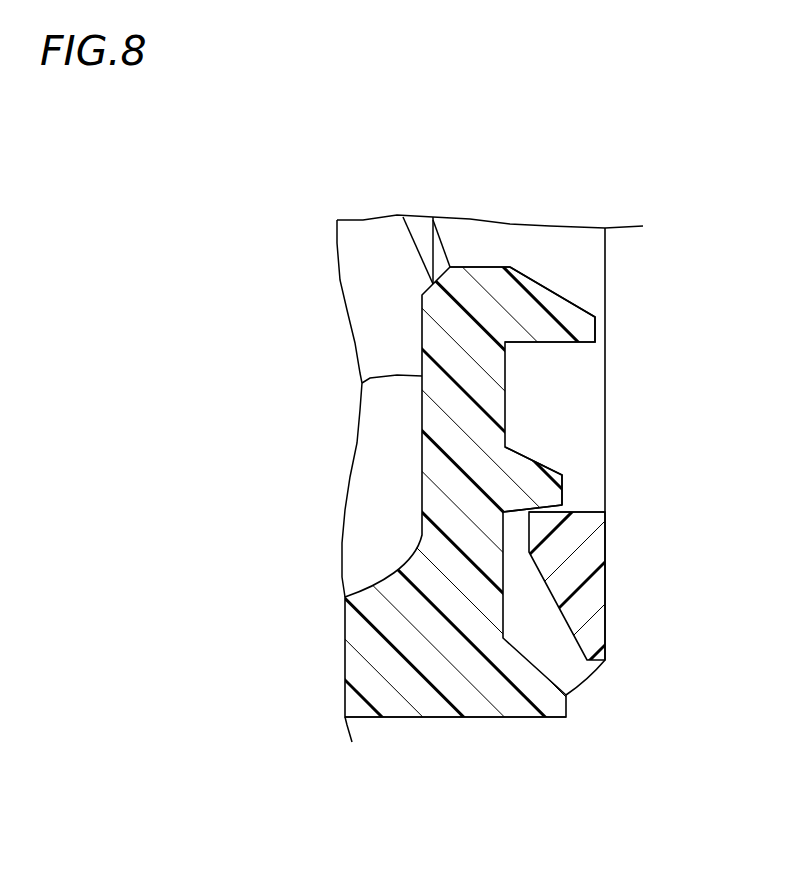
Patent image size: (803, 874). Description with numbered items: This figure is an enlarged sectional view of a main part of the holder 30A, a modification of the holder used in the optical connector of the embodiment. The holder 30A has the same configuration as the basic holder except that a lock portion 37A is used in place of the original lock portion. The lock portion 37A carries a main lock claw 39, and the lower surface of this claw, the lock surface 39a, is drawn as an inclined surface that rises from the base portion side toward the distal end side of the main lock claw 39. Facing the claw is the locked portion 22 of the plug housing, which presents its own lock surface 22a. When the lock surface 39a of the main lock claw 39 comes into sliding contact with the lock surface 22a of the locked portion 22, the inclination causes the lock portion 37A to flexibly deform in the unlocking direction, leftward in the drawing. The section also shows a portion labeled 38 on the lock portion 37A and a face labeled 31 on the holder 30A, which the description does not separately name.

The locked portion 22 is at (578, 537).
The lock surface 22a is at (583, 513).
The holder 30A is at (452, 717).
The end surface of housing 31 is at (413, 715).
The lock portion 37A is at (533, 270).
The flange portion 38 is at (568, 322).
The main lock claw 39 is at (533, 485).
The lock surface 39a is at (558, 512).